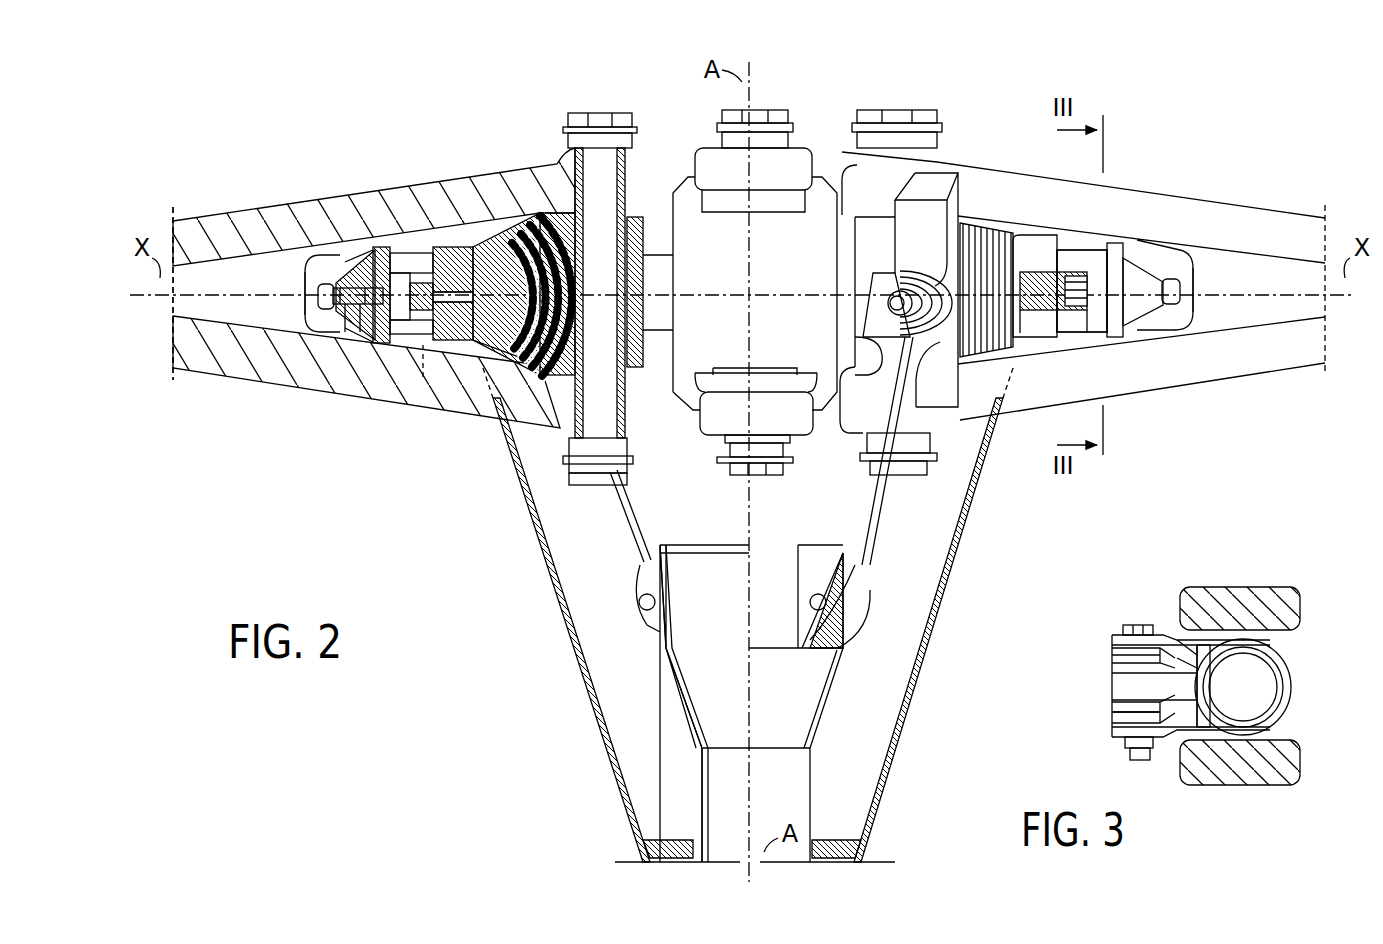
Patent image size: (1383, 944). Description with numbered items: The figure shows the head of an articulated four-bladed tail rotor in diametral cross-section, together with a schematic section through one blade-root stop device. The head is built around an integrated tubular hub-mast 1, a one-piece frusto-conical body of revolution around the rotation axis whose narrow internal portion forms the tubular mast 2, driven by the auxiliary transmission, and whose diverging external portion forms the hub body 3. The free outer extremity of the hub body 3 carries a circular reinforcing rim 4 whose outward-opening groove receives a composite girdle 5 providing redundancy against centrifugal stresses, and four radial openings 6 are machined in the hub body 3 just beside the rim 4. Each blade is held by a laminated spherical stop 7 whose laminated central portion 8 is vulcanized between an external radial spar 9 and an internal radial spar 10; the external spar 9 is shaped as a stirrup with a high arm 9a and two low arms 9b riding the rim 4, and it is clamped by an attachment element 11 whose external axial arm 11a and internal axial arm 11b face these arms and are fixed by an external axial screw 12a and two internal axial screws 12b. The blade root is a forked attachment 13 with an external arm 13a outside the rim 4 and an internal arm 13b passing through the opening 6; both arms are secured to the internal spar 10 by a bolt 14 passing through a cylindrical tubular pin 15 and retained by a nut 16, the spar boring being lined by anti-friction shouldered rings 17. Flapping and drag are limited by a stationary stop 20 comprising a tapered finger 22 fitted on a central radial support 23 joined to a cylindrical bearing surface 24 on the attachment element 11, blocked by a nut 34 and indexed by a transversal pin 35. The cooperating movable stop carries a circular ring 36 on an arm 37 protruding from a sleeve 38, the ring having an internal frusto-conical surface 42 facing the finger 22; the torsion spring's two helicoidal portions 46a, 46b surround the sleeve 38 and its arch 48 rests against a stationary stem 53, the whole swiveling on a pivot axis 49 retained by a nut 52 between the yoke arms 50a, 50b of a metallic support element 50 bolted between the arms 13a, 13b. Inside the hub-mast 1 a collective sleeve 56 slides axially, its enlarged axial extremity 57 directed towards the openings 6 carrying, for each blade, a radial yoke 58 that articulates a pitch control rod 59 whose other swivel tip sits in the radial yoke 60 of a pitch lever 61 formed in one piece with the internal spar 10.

In FIG. 2, the integrated tubular hub-mast 1 is at (562, 682).
In FIG. 2, the tubular mast 2 is at (864, 840).
In FIG. 2, the hub body 3 is at (950, 578).
In FIG. 2, the reinforcing rim 4 is at (658, 282).
In FIG. 2, the girdle 5 is at (380, 258).
In FIG. 2, the radial opening 6 is at (510, 458).
In FIG. 2, the laminated spherical stop 7 is at (492, 245).
In FIG. 2, the laminated central portion 8 is at (510, 232).
In FIG. 2, the external radial spar 9 is at (452, 248).
In FIG. 2, the high arm 9a is at (413, 258).
In FIG. 2, the low arms 9b is at (480, 348).
In FIG. 2, the internal radial spar 10 is at (558, 168).
In FIG. 2, the attachment element 11 is at (1082, 335).
In FIG. 2, the external axial arm 11a is at (393, 258).
In FIG. 2, the internal axial arm 11b is at (410, 345).
In FIG. 2, the external axial screw 12a is at (440, 245).
In FIG. 2, the internal axial screws 12b is at (425, 358).
In FIG. 2, the forked attachment 13 is at (196, 372).
In FIG. 2, the external arm 13a is at (215, 232).
In FIG. 3, the external arm 13a is at (1298, 604).
In FIG. 2, the internal arm 13b is at (243, 345).
In FIG. 3, the internal arm 13b is at (1290, 765).
In FIG. 2, the bolt 14 is at (601, 160).
In FIG. 2, the cylindrical tubular pin 15 is at (577, 438).
In FIG. 2, the nut 16 is at (596, 478).
In FIG. 2, the anti-friction shouldered rings 17 is at (652, 372).
In FIG. 2, the stationary stop 20 is at (343, 260).
In FIG. 2, the stop element 22 is at (345, 345).
In FIG. 2, the central radial support 23 is at (330, 315).
In FIG. 2, the cylindrical bearing surface 24 is at (358, 330).
In FIG. 2, the nut 34 is at (317, 294).
In FIG. 2, the transversal pin 35 is at (362, 257).
In FIG. 2, the circular ring 36 is at (395, 280).
In FIG. 3, the circular ring 36 is at (1288, 674).
In FIG. 3, the arm 37 is at (1115, 712).
In FIG. 3, the sleeve 38 is at (1115, 688).
In FIG. 3, the frusto-conical surface 42 is at (1282, 693).
In FIG. 3, the helicoidal portion 46a is at (1110, 658).
In FIG. 3, the helicoidal portion 46b is at (1117, 718).
In FIG. 3, the support arch 48 is at (1183, 660).
In FIG. 3, the pivot axis 49 is at (1140, 625).
In FIG. 2, the metallic support element 50 is at (252, 267).
In FIG. 3, the yoke arm 50a is at (1177, 637).
In FIG. 3, the yoke arm 50b is at (1173, 740).
In FIG. 3, the nut 52 is at (1128, 760).
In FIG. 3, the stationary stem 53 is at (1213, 670).
In FIG. 2, the collective sleeve 56 is at (678, 707).
In FIG. 2, the mast head 57 is at (666, 590).
In FIG. 2, the radial yoke 58 is at (648, 622).
In FIG. 2, the pitch control rod 59 is at (630, 513).
In FIG. 2, the radial yoke 60 is at (877, 322).
In FIG. 2, the pitch lever 61 is at (905, 253).